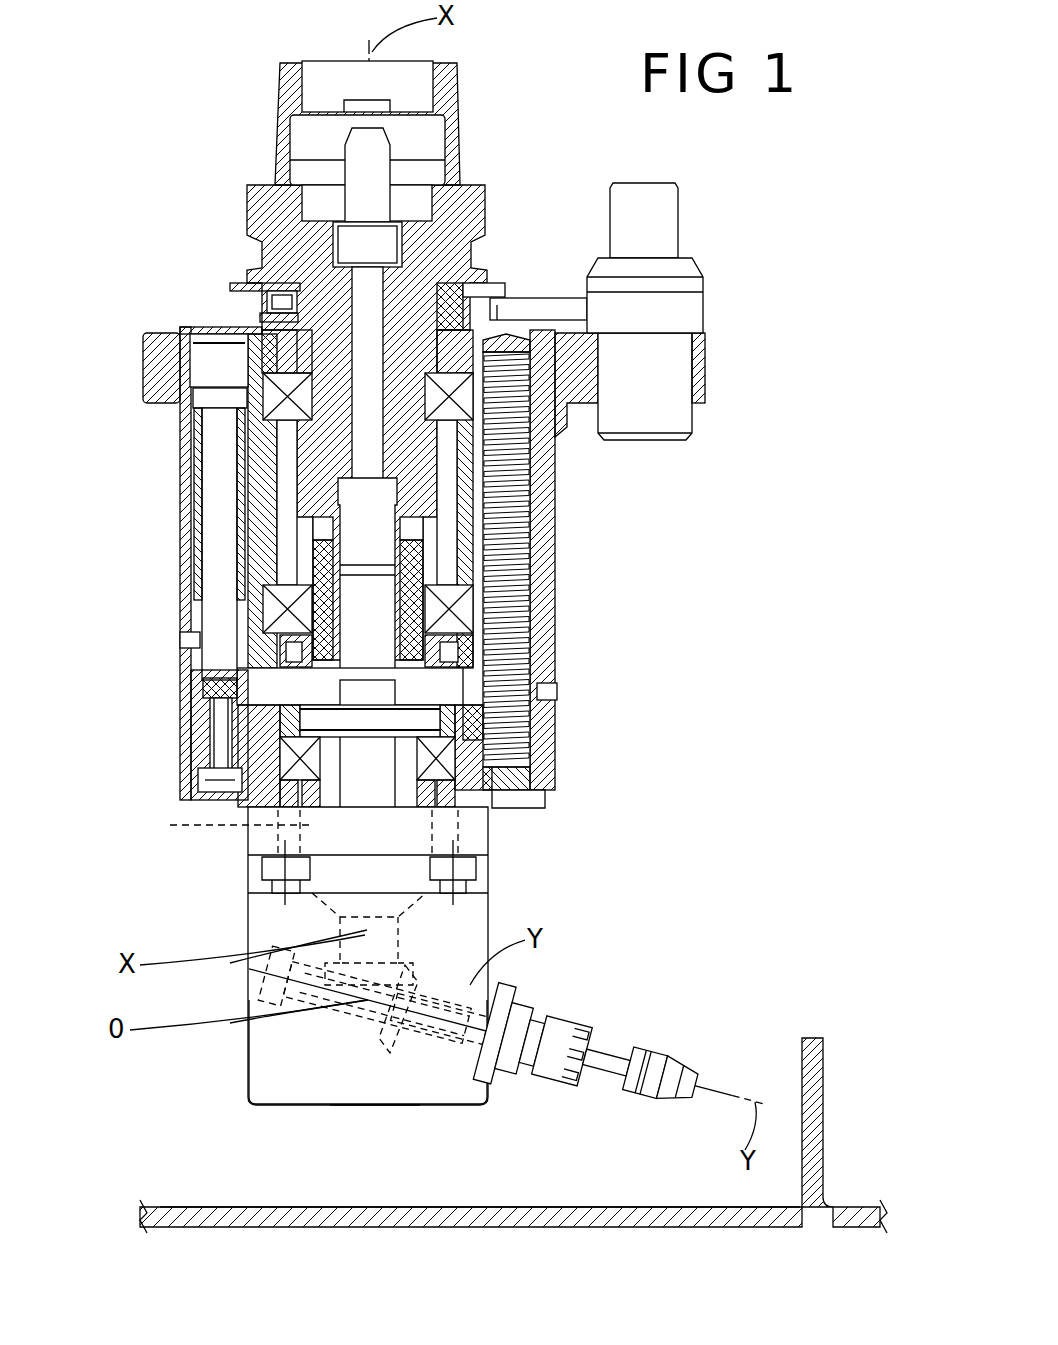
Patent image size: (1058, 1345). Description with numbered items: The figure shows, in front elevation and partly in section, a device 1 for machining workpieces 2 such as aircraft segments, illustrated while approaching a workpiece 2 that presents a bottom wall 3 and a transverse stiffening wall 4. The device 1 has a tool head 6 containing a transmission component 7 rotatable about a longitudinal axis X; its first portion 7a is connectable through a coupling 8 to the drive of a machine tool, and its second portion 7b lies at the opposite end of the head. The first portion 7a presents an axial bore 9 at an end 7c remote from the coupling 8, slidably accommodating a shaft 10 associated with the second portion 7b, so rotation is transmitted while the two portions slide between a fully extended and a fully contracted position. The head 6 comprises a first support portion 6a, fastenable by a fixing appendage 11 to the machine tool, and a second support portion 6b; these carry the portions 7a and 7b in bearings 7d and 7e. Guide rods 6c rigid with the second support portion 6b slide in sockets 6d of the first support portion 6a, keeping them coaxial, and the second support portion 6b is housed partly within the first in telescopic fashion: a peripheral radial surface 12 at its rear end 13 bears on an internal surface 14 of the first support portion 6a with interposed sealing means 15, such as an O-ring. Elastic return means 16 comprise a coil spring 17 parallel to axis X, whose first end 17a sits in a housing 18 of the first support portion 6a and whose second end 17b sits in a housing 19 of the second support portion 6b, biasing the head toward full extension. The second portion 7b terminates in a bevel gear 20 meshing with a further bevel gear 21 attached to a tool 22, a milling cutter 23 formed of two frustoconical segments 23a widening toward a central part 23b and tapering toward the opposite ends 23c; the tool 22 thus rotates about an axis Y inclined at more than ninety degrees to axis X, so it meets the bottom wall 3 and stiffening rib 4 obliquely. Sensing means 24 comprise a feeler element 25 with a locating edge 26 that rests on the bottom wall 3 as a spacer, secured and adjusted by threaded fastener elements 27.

The device for machining workpieces 1 is at (757, 702).
The workpiece 2 is at (355, 1237).
The bottom wall 3 is at (430, 1228).
The transverse stiffening wall 4 is at (815, 1060).
The tool head 6 is at (150, 335).
The first support portion 6a is at (215, 405).
The second support portion 6b is at (196, 745).
The guide rod 6c is at (220, 500).
The socket 6d is at (225, 525).
The transmission component 7 is at (355, 612).
The first portion of the transmission component 7a is at (470, 195).
The second portion of the transmission component 7b is at (395, 795).
The end of the first portion 7c is at (415, 690).
The bearings 7d is at (290, 385).
The bearings 7e is at (300, 765).
The coupling 8 is at (320, 75).
The axial bore 9 is at (396, 640).
The shaft 10 is at (385, 700).
The fixing appendage 11 is at (655, 215).
The peripheral radial surface 12 is at (210, 775).
The rear end of the second support portion 13 is at (547, 790).
The internal surface 14 is at (545, 695).
The sealing means 15 is at (215, 700).
The elastic return means 16 is at (540, 548).
The coil spring 17 is at (505, 505).
The first end of the spring 17a is at (700, 395).
The second end of the spring 17b is at (525, 775).
The housing 18 is at (505, 440).
The housing 19 is at (470, 722).
The bevel gear 20 is at (300, 990).
The further bevel gear 21 is at (368, 1035).
The tool 22 is at (575, 1015).
The milling cutter 23 is at (700, 1070).
The frustoconical segments 23a is at (655, 1090).
The central part 23b is at (672, 1062).
The opposite ends 23c is at (706, 1088).
The sensing means 24 is at (246, 915).
The feeler element 25 is at (270, 1070).
The locating edge 26 is at (377, 1107).
The threaded fastener elements 27 is at (265, 870).